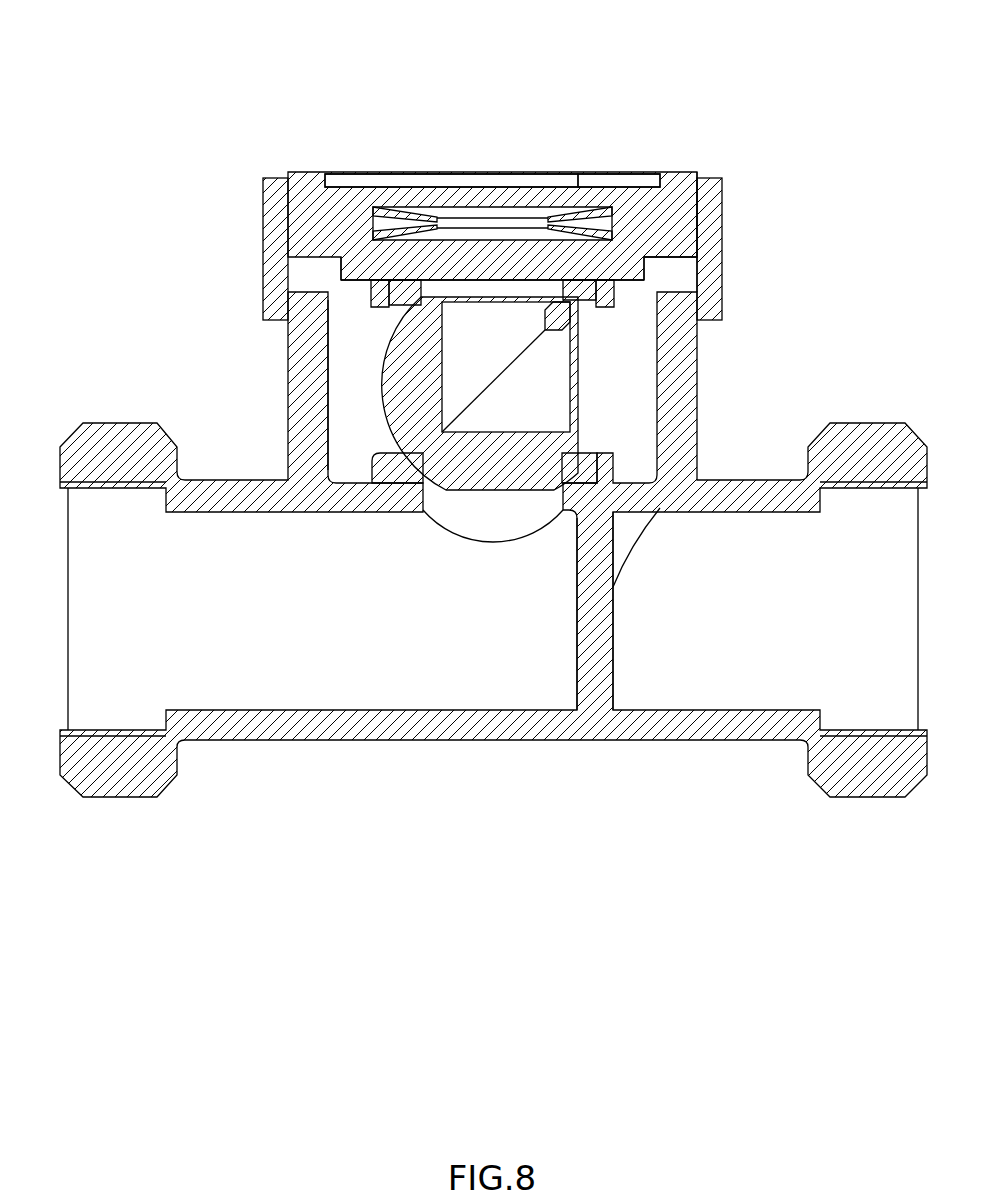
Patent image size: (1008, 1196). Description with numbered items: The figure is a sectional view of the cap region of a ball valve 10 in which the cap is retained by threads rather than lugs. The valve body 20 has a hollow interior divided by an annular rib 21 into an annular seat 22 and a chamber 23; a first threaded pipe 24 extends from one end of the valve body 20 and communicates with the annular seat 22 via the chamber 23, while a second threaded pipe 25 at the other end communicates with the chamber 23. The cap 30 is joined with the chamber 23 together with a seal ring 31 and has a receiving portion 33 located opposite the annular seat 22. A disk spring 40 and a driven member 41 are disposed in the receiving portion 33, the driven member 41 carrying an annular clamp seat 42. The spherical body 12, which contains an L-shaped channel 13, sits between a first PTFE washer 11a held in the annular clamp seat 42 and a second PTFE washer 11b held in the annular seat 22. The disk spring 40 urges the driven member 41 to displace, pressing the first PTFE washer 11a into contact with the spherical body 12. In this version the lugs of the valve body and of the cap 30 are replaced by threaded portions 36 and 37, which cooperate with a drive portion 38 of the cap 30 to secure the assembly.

The ball valve 10 is at (582, 104).
The first PTFE washer 11a is at (386, 307).
The second PTFE washer 11b is at (392, 481).
The spherical body 12 is at (498, 452).
The L-shaped channel 13 is at (548, 391).
The valve body 20 is at (258, 722).
The annular rib 21 is at (598, 512).
The annular seat 22 is at (455, 490).
The chamber 23 is at (355, 425).
The first threaded pipe 24 is at (103, 735).
The second threaded pipe 25 is at (865, 735).
The cap 30 is at (604, 197).
The seal ring 31 is at (690, 255).
The receiving portion 33 is at (486, 212).
The threaded portion 36 is at (302, 168).
The threaded portion 37 is at (286, 207).
The drive portion 38 is at (531, 176).
The disk spring 40 is at (374, 208).
The driven member 41 is at (405, 258).
The annular clamp seat 42 is at (380, 283).